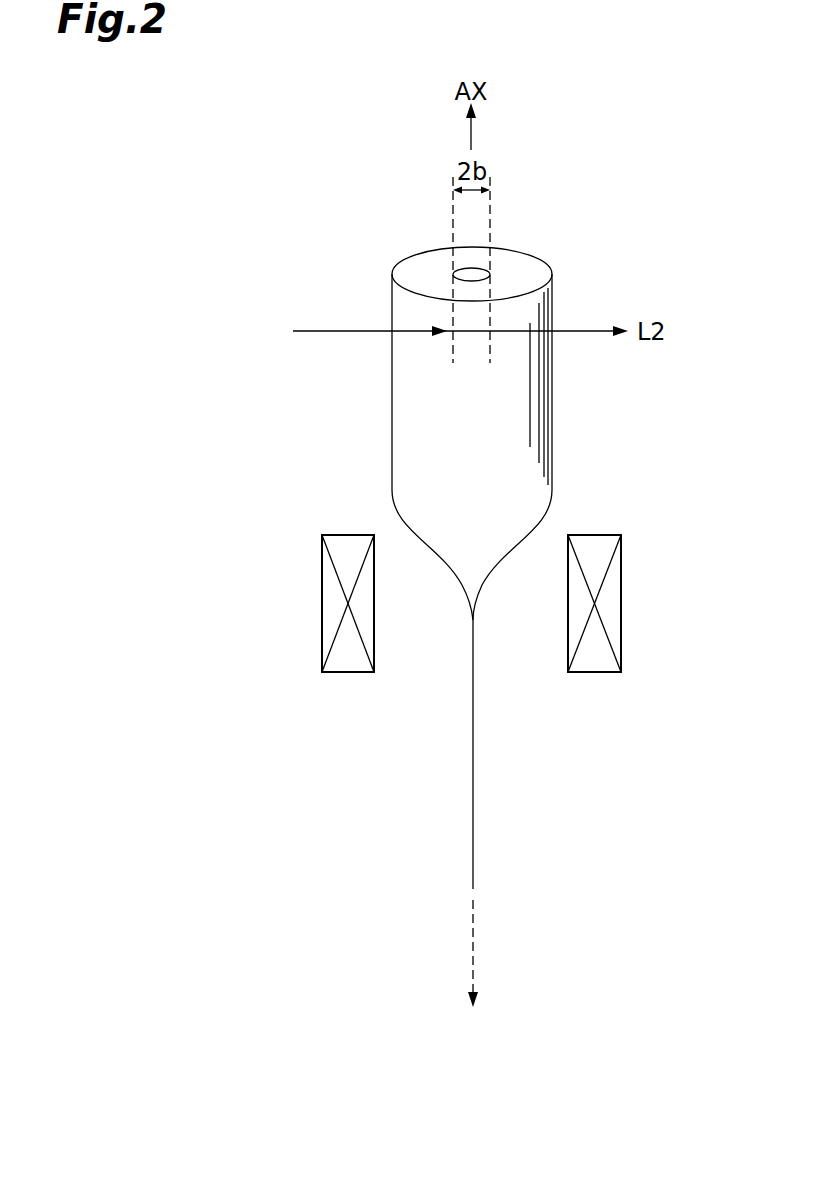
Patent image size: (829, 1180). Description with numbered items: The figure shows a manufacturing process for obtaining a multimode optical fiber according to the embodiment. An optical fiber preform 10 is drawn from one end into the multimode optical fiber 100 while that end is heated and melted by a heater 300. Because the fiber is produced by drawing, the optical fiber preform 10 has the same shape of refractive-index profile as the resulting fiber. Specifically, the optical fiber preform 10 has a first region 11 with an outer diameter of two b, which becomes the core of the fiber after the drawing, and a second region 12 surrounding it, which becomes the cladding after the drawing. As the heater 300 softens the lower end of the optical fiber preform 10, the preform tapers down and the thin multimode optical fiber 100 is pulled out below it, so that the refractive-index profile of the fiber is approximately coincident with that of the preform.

The optical fiber preform 10 is at (525, 410).
The first region 11 is at (468, 273).
The second region 12 is at (530, 267).
The heater 300 is at (322, 572).
The multimode optical fiber 100 is at (474, 843).